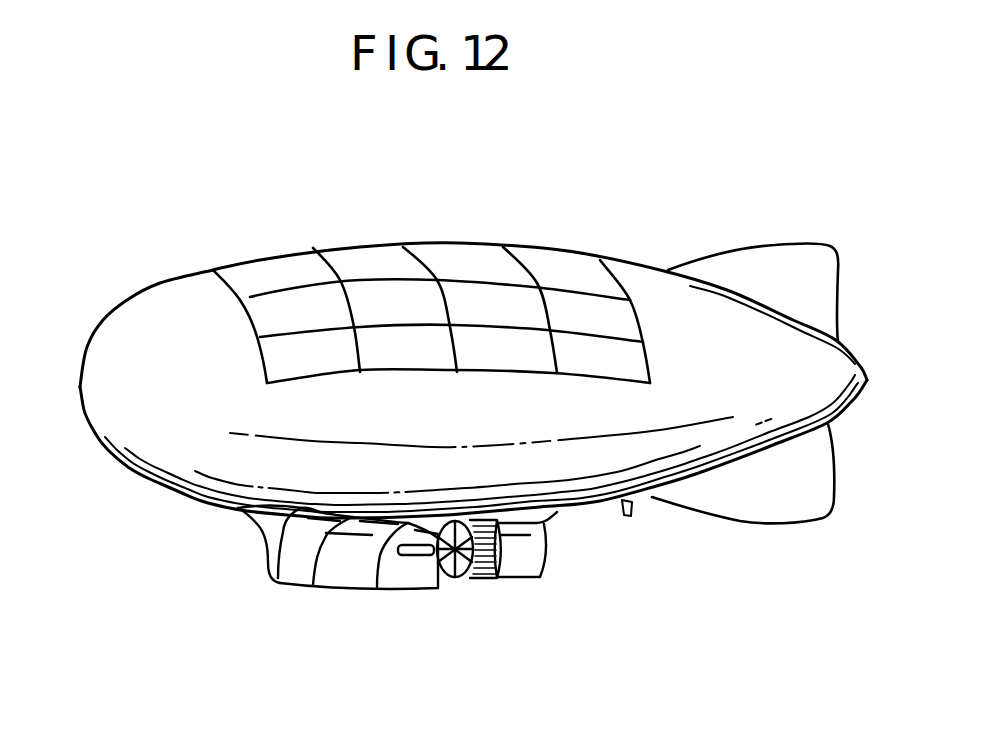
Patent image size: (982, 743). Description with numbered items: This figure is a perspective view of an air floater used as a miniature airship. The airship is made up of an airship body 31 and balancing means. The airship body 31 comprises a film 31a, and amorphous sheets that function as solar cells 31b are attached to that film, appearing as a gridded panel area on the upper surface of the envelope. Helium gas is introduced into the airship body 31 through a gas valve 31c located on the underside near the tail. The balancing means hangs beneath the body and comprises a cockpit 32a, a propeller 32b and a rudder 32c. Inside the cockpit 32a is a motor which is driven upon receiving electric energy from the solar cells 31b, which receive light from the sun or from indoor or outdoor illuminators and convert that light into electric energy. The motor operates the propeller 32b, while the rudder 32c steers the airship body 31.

The airship body 31 is at (99, 305).
The film 31a is at (174, 300).
The solar cells 31b is at (283, 270).
The gas valve 31c is at (631, 518).
The cockpit 32a is at (392, 570).
The propeller 32b is at (445, 560).
The rudder 32c is at (528, 556).